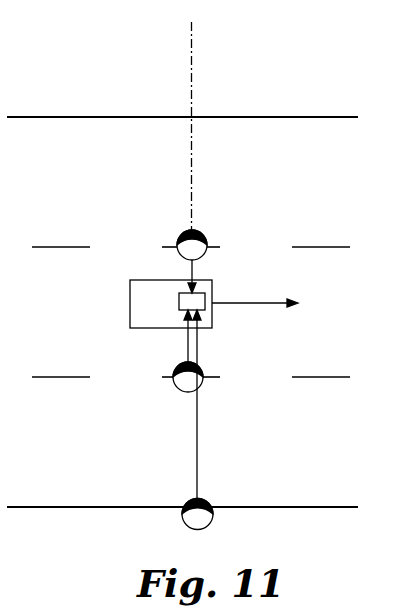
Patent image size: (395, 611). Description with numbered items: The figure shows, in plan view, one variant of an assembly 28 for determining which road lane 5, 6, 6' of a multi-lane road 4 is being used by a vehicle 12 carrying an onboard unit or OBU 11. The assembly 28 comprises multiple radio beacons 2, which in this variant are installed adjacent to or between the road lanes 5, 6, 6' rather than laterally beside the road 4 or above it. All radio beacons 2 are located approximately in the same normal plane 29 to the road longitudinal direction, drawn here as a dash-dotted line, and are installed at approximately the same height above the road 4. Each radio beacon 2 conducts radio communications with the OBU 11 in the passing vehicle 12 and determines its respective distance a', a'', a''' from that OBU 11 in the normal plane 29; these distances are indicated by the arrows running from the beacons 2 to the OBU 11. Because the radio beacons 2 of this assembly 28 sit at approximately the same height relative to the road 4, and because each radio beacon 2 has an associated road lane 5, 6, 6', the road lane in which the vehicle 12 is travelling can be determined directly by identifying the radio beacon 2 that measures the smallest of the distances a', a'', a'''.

The radio beacon 2 is at (183, 233).
The multi-lane road 4 is at (78, 520).
The road lane 5 is at (65, 196).
The road lane 6 is at (191, 339).
The road lane 6' is at (60, 448).
The onboard unit 11 is at (188, 300).
The vehicle 12 is at (130, 290).
The assembly 28 is at (243, 420).
The normal plane 29 is at (192, 70).
The distance a' is at (216, 276).
The distance a'' is at (220, 404).
The distance a''' is at (165, 336).